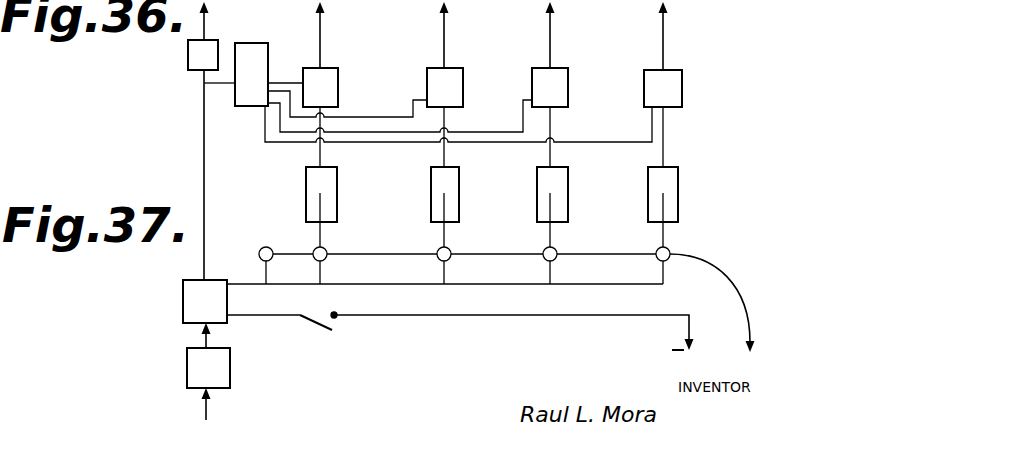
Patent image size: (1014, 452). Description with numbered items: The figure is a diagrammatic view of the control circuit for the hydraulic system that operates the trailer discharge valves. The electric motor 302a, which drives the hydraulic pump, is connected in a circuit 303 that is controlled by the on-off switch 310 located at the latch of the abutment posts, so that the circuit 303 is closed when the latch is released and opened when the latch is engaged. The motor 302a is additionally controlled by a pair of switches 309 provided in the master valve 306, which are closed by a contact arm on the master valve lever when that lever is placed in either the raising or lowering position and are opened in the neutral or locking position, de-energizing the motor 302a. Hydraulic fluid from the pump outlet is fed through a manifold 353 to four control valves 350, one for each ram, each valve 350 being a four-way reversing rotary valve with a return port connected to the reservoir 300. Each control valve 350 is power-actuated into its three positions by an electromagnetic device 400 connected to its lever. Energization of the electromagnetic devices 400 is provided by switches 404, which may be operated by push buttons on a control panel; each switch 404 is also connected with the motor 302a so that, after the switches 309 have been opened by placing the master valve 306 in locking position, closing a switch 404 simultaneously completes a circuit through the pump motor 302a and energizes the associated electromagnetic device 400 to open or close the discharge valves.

The reservoir 300 is at (209, 380).
The electric motor 302a is at (183, 320).
The circuit 303 is at (507, 322).
The master valve 306 is at (187, 57).
The switches 309 is at (279, 241).
The on-off switch 310 is at (336, 333).
The control valves 350 is at (338, 81).
The manifold 353 is at (262, 44).
The electromagnetic devices 400 is at (337, 191).
The switches 404 is at (326, 259).